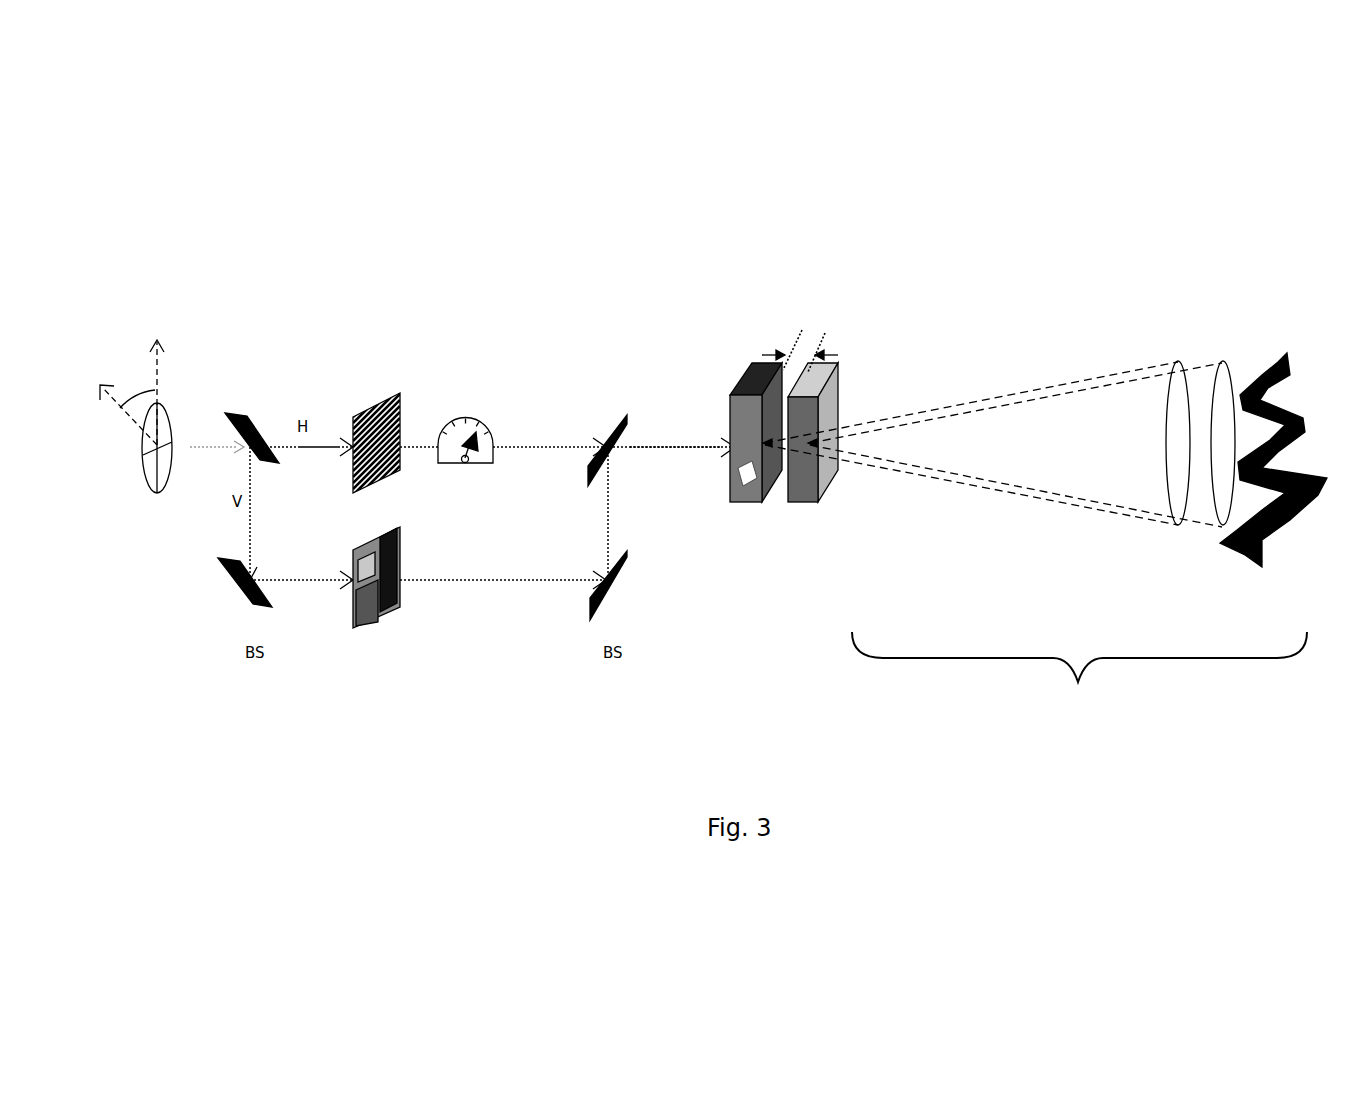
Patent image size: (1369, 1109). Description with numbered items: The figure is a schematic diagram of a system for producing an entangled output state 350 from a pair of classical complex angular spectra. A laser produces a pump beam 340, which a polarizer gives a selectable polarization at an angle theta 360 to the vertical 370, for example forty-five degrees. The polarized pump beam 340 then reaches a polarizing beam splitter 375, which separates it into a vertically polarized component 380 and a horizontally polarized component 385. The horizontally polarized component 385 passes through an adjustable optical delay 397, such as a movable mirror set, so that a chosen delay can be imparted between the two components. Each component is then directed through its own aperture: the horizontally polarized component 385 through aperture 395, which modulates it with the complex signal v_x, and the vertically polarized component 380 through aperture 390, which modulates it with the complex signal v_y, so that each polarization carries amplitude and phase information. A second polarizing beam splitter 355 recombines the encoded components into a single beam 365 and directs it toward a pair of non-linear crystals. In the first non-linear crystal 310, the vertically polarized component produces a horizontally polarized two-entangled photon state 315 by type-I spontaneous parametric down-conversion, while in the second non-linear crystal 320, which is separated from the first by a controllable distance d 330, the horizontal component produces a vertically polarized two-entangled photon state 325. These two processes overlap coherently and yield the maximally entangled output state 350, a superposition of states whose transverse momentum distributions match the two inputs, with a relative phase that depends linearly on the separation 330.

The first non-linear crystal 310 is at (742, 497).
The horizontally polarized two-entangled photon state 315 is at (1098, 377).
The second non-linear crystal 320 is at (805, 500).
The vertically polarized two-entangled photon state 325 is at (1222, 363).
The crystal separation distance d 330 is at (812, 342).
The pump beam 340 is at (192, 447).
The entangled output state 350 is at (1079, 675).
The second polarizing beam splitter 355 is at (608, 440).
The polarization angle theta 360 is at (104, 384).
The single combined beam 365 is at (663, 447).
The vertical reference direction 370 is at (163, 346).
The polarizing beam splitter 375 is at (253, 427).
The vertically polarized component 380 is at (250, 518).
The horizontally polarized component 385 is at (322, 447).
The aperture 390 is at (353, 612).
The aperture 395 is at (402, 402).
The adjustable optical delay 397 is at (480, 423).